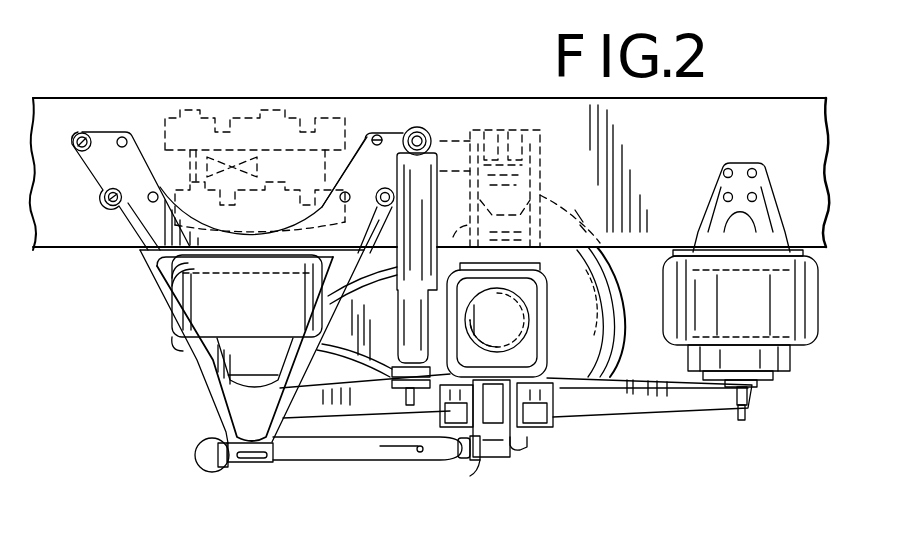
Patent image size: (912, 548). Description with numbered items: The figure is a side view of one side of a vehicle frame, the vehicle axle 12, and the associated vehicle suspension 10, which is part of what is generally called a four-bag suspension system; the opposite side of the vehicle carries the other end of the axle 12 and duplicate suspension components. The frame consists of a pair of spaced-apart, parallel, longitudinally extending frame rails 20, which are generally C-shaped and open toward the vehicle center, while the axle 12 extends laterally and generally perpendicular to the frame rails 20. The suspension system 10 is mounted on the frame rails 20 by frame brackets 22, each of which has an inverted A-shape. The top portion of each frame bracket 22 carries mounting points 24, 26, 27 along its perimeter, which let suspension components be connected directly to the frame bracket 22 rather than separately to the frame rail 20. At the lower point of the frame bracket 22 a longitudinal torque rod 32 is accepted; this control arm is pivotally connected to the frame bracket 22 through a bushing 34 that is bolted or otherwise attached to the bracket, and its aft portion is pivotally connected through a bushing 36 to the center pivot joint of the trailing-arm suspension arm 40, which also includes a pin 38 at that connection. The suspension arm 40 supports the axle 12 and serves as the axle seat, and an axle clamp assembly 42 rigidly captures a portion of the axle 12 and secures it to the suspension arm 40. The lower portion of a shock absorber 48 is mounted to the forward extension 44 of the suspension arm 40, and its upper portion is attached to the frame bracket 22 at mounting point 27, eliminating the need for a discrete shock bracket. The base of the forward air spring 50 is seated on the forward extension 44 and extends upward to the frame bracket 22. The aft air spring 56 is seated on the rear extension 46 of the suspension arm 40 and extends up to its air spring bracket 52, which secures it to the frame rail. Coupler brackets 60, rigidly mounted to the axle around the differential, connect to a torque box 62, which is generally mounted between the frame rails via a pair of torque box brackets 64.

The vehicle suspension system 10 is at (158, 406).
The vehicle axle 12 is at (479, 331).
The frame rail 20 is at (72, 203).
The frame bracket 22 is at (150, 280).
The mounting point 24 is at (74, 147).
The mounting point 26 is at (106, 202).
The mounting point 27 is at (417, 131).
The longitudinal torque rod 32 is at (318, 467).
The bushing 34 is at (215, 460).
The bushing 36 is at (477, 461).
The pin 38 is at (508, 440).
The suspension arm 40 is at (525, 438).
The axle clamp assembly 42 is at (548, 365).
The forward extension 44 is at (354, 407).
The rear extension 46 is at (591, 405).
The shock absorber 48 is at (399, 274).
The forward air spring 50 is at (213, 295).
The air spring bracket 52 is at (784, 243).
The aft air spring 56 is at (802, 348).
The coupler bracket 60 is at (526, 219).
The torque box 62 is at (490, 188).
The torque box bracket 64 is at (233, 137).